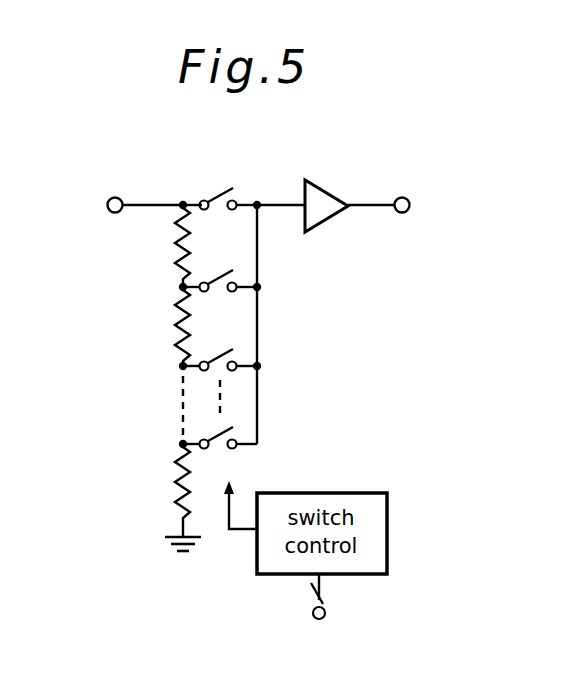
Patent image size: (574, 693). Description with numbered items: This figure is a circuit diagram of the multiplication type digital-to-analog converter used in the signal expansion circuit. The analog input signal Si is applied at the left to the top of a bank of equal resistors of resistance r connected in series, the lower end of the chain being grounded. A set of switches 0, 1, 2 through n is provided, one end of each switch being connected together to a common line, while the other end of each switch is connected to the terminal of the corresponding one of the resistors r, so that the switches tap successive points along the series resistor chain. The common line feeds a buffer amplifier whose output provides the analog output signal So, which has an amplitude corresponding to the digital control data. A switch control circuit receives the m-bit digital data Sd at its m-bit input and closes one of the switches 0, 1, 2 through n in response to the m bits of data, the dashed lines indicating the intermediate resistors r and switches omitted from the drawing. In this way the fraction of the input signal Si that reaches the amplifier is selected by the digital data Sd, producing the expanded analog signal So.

The analog input signal Si is at (126, 205).
The analog output signal So is at (397, 205).
The m-bit digital data Sd is at (320, 631).
The switch 0 is at (229, 184).
The switch 1 is at (220, 266).
The switch 2 is at (220, 344).
The switch n is at (220, 454).
The resistor of resistance r is at (170, 372).
The m-bit control input m is at (334, 592).